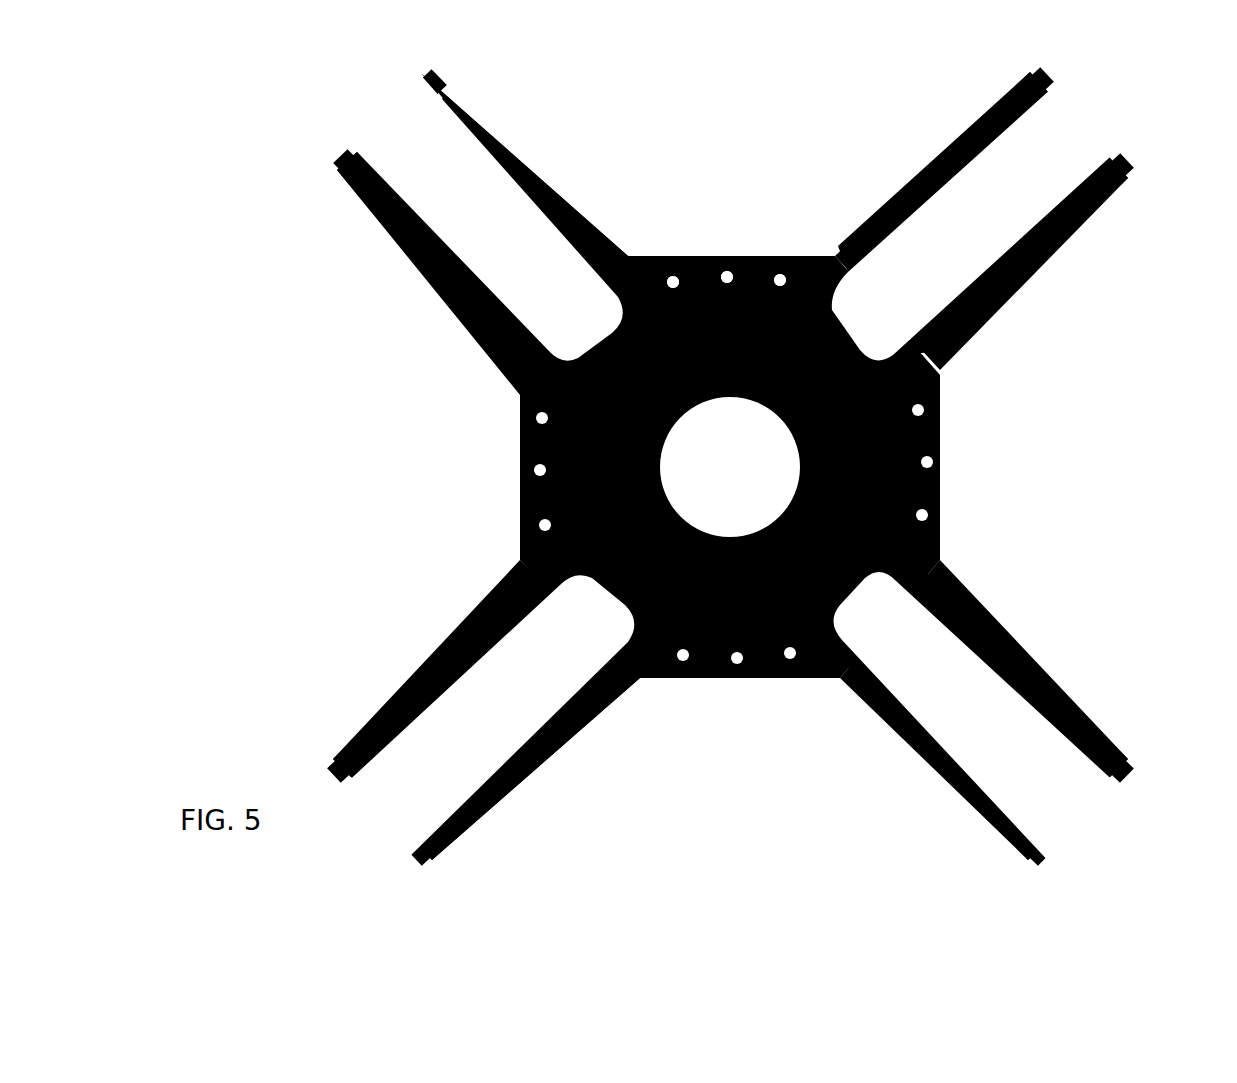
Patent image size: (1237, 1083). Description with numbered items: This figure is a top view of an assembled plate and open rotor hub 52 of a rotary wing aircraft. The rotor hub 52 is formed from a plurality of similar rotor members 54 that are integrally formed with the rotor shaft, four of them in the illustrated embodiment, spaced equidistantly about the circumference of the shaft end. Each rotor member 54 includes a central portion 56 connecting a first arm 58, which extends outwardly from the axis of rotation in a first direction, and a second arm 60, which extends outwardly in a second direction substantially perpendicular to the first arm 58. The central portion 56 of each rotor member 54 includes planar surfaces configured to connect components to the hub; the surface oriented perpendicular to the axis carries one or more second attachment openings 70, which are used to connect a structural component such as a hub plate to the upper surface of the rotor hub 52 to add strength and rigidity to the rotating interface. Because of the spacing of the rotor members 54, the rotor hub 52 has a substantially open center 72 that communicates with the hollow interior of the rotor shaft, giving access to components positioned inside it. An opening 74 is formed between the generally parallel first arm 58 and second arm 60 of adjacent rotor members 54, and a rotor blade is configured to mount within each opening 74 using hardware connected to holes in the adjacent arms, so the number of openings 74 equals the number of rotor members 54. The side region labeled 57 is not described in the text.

The rotor hub 52 is at (150, 210).
The rotor member 54 is at (665, 170).
The central portion 56 is at (655, 258).
The side portion 57 is at (1036, 432).
The first arm 58 is at (435, 270).
The second arm 60 is at (513, 150).
The second attachment opening 70 is at (780, 270).
The open center 72 is at (870, 575).
The opening 74 is at (410, 150).